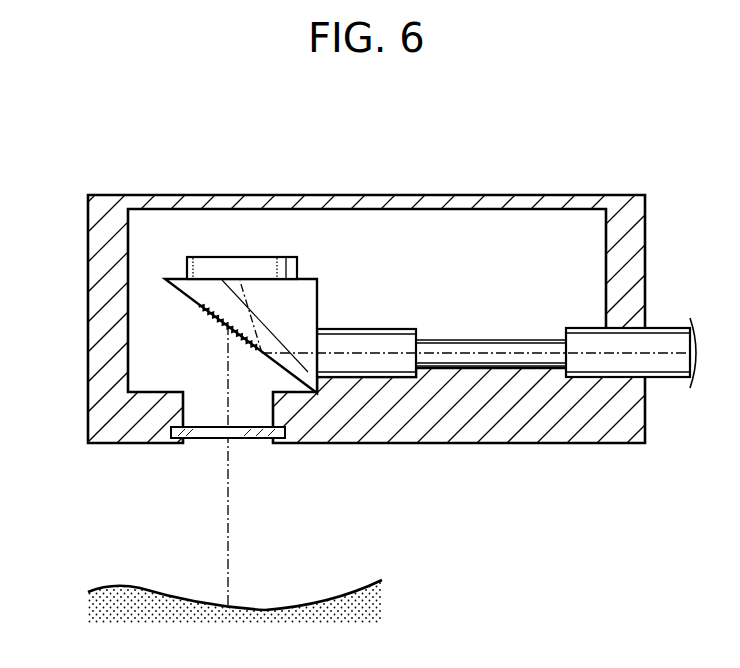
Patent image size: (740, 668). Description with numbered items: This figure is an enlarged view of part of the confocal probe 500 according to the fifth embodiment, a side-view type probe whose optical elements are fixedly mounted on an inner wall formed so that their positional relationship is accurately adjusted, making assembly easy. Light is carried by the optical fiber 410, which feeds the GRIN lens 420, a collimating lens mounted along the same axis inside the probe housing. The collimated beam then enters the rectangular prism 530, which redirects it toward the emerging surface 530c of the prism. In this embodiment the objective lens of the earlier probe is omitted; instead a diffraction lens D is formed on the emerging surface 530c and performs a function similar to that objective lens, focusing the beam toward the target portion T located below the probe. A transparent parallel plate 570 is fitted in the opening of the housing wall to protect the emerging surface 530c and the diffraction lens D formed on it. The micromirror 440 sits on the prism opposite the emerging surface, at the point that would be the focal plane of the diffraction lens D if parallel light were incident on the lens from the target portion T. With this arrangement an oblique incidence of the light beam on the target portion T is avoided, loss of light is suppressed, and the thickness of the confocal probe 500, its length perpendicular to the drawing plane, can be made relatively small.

The confocal probe 500 is at (491, 154).
The optical fiber 410 is at (526, 316).
The GRIN lens 420 is at (376, 342).
The micromirror 440 is at (258, 257).
The rectangular prism 530 is at (212, 290).
The emerging surface 530c is at (186, 296).
The transparent parallel plate 570 is at (241, 438).
The diffraction lens D is at (217, 330).
The target portion T is at (333, 595).